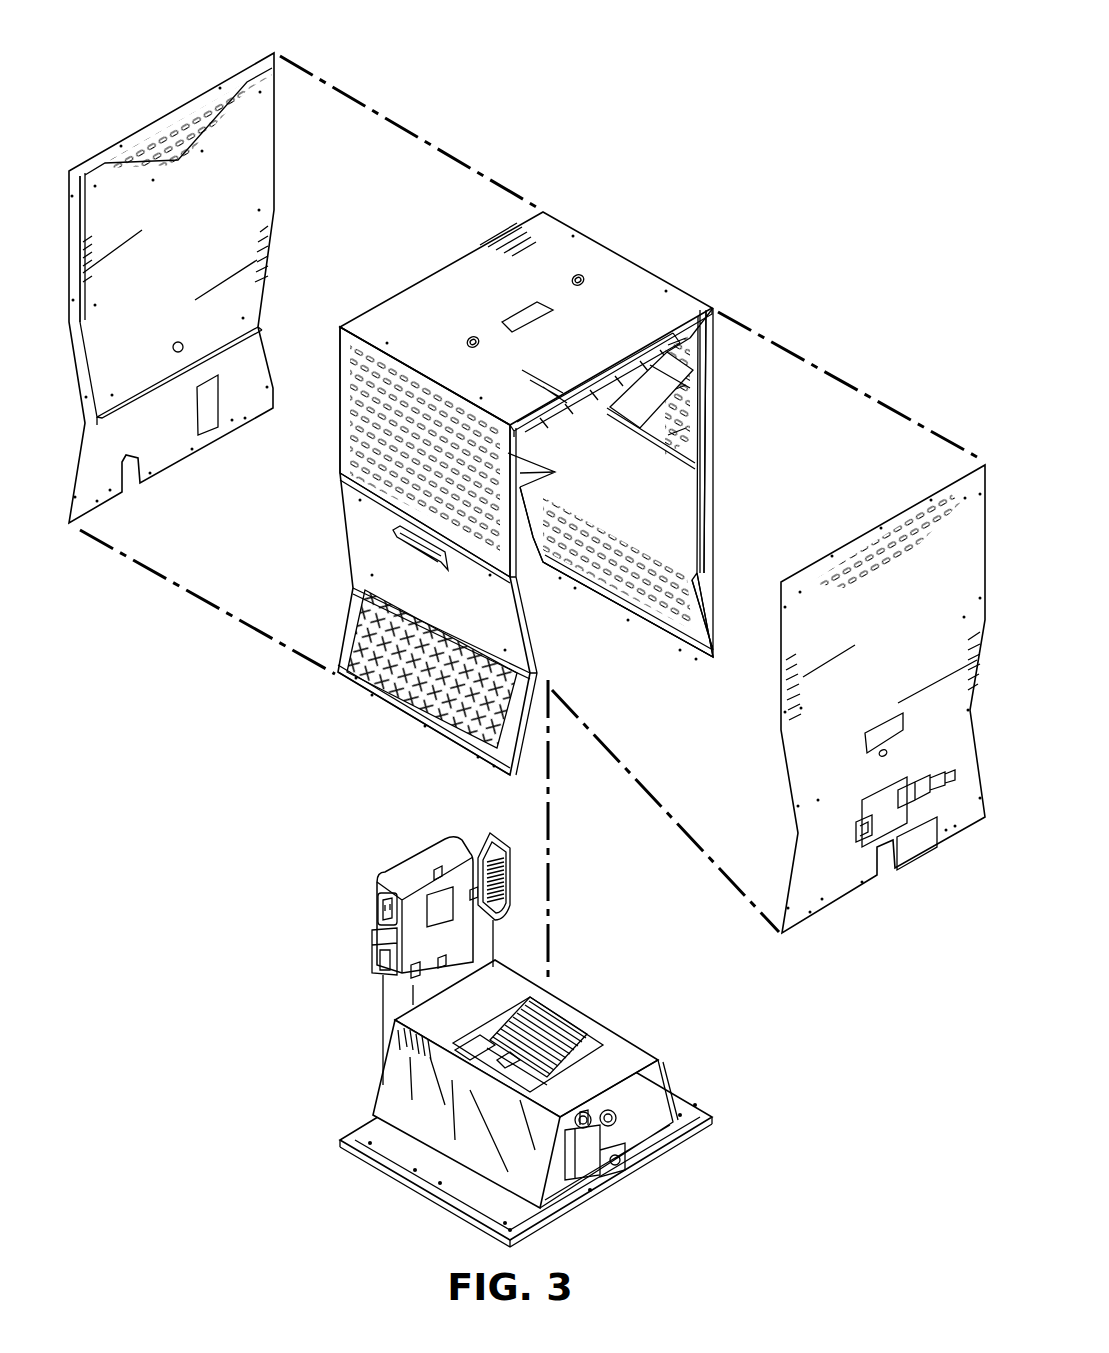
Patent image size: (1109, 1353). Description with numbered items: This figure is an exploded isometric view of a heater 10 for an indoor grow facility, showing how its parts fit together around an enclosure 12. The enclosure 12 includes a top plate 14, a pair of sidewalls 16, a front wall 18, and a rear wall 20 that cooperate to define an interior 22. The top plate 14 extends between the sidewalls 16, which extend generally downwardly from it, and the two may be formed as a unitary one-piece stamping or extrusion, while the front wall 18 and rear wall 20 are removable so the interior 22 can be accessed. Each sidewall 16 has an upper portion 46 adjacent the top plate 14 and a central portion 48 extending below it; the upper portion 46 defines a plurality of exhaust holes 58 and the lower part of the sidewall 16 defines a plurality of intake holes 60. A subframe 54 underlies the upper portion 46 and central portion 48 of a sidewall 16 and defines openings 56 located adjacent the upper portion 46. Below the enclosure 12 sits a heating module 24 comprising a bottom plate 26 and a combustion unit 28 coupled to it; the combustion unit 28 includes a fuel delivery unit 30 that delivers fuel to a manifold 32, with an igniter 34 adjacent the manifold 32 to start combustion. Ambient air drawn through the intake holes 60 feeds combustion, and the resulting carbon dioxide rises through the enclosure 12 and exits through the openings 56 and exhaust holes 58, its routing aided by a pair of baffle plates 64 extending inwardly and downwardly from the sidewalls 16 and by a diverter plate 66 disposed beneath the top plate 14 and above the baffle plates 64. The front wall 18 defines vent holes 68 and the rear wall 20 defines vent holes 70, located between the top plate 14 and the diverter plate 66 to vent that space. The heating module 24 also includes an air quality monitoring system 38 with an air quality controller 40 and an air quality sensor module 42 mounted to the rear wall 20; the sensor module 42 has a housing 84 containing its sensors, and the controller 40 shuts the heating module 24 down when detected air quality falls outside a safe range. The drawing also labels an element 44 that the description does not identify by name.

The heater 10 is at (215, 992).
The enclosure 12 is at (205, 722).
The top plate 14 is at (445, 275).
The sidewalls 16 is at (272, 458).
The front wall 18 is at (845, 930).
The rear wall 20 is at (175, 65).
The interior 22 is at (665, 520).
The heating module 24 is at (280, 1170).
The bottom plate 26 is at (360, 1140).
The combustion unit 28 is at (626, 1040).
The fuel delivery unit 30 is at (620, 1155).
The manifold 32 is at (545, 1035).
The igniter 34 is at (500, 1082).
The air quality monitoring system 38 is at (340, 864).
The air quality controller 40 is at (415, 870).
The air quality sensor module 42 is at (480, 838).
The connector 44 is at (900, 820).
The upper portion 46 is at (350, 355).
The central portion 48 is at (355, 542).
The subframes 54 is at (710, 497).
The openings 56 is at (698, 348).
The exhaust holes 58 is at (683, 340).
The intake holes 60 is at (355, 586).
The baffle plates 64 is at (625, 412).
The diverter plate 66 is at (633, 365).
The vent holes 68 is at (895, 560).
The vent holes 70 is at (158, 138).
The housing 84 is at (505, 865).